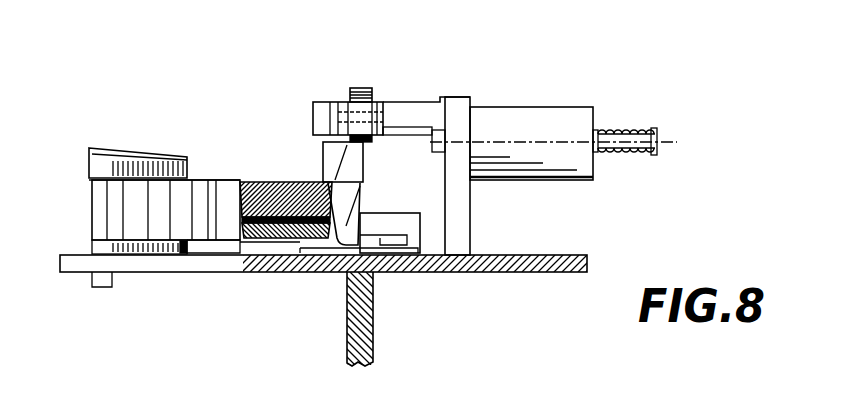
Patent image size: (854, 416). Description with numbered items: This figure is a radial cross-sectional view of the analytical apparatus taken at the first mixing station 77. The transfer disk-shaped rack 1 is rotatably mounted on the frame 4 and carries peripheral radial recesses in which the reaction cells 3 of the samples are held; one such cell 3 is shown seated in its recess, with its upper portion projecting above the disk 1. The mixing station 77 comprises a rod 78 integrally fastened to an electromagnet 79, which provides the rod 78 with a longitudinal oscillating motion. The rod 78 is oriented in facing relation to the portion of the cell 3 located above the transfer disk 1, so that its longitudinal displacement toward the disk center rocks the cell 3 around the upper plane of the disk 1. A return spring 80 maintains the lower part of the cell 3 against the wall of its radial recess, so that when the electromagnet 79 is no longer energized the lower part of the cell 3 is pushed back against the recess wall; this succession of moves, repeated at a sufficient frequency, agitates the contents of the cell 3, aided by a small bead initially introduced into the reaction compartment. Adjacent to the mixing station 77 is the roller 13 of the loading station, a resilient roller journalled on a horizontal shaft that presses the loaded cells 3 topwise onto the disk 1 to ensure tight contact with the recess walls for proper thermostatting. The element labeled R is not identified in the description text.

The transfer disk-shaped rack 1 is at (243, 181).
The reaction cell 3 is at (360, 202).
The frame 4 is at (548, 273).
The roller 13 is at (357, 87).
The first mixing station 77 is at (363, 68).
The rod 78 is at (417, 107).
The electromagnet 79 is at (529, 117).
The return spring 80 is at (365, 229).
The roll R is at (280, 222).